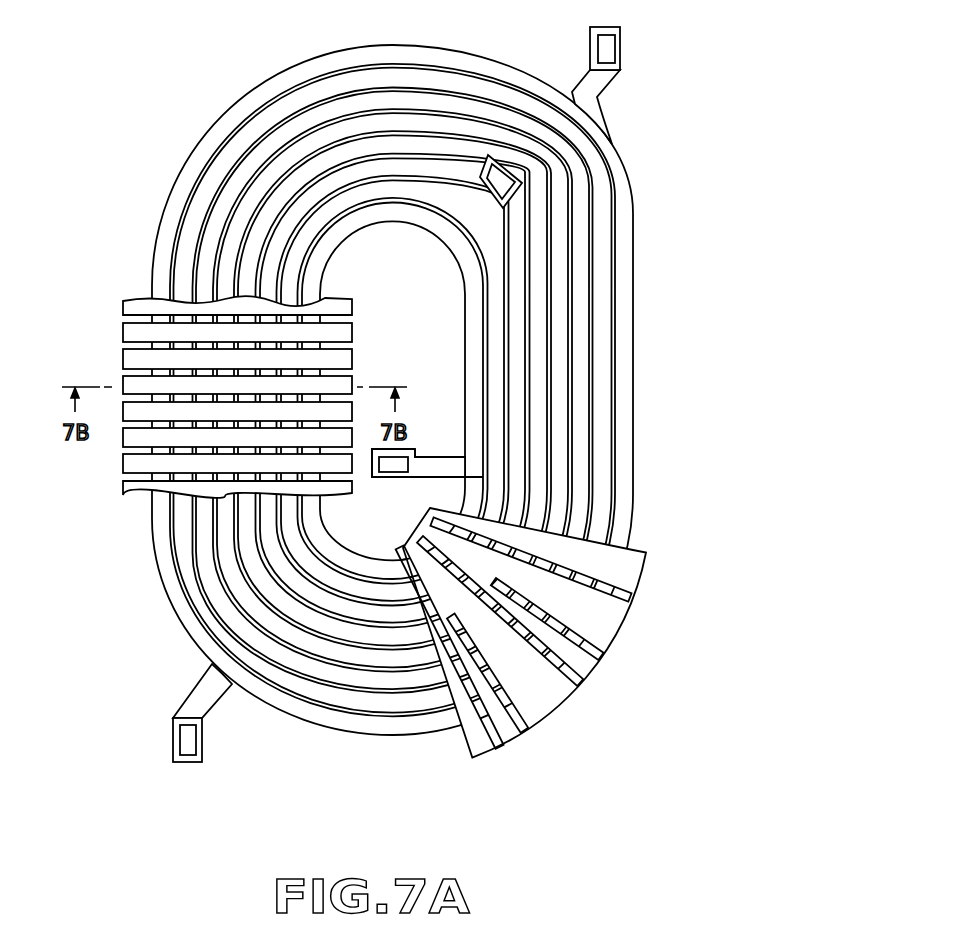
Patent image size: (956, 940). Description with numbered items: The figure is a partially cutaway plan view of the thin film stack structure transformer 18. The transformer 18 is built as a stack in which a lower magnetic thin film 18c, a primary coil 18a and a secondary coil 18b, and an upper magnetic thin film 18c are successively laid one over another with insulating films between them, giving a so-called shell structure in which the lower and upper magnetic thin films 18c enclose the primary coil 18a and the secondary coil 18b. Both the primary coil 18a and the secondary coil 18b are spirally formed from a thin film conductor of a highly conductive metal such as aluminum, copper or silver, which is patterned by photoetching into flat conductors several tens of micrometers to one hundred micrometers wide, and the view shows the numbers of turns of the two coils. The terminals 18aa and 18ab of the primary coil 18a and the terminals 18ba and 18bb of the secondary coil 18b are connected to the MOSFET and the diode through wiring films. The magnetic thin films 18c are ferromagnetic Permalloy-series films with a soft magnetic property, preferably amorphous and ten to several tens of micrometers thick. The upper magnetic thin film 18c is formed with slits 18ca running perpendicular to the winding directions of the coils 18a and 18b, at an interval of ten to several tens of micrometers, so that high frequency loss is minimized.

The transformer 18 is at (263, 74).
The primary coil 18a is at (336, 725).
The secondary coil 18b is at (214, 666).
The magnetic thin film 18c is at (123, 305).
The slits 18ca is at (130, 362).
The terminal 18aa is at (400, 480).
The terminal 18ab is at (620, 43).
The terminal 18ba is at (173, 740).
The terminal 18bb is at (522, 182).